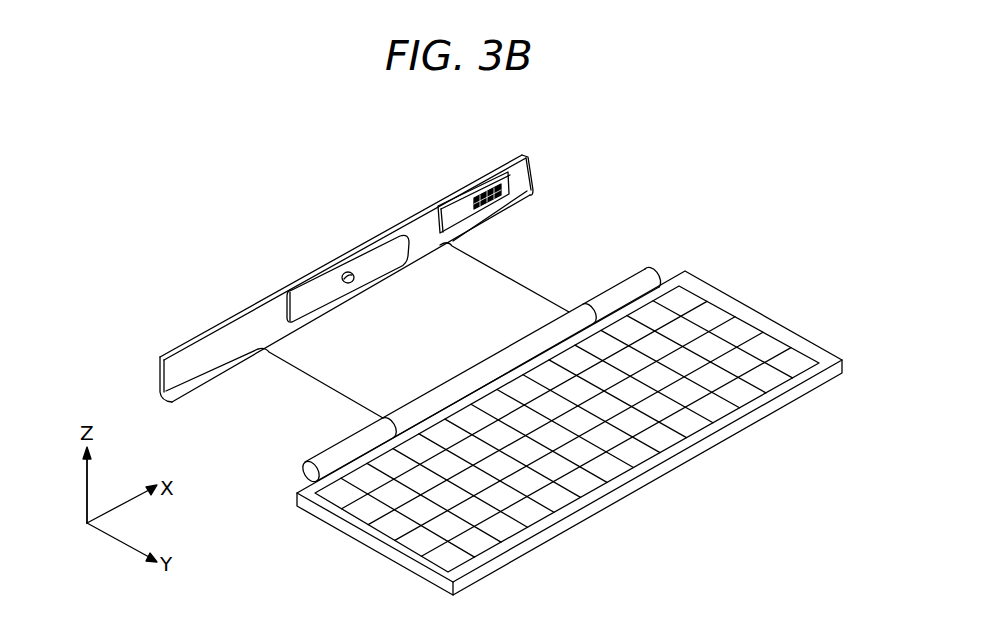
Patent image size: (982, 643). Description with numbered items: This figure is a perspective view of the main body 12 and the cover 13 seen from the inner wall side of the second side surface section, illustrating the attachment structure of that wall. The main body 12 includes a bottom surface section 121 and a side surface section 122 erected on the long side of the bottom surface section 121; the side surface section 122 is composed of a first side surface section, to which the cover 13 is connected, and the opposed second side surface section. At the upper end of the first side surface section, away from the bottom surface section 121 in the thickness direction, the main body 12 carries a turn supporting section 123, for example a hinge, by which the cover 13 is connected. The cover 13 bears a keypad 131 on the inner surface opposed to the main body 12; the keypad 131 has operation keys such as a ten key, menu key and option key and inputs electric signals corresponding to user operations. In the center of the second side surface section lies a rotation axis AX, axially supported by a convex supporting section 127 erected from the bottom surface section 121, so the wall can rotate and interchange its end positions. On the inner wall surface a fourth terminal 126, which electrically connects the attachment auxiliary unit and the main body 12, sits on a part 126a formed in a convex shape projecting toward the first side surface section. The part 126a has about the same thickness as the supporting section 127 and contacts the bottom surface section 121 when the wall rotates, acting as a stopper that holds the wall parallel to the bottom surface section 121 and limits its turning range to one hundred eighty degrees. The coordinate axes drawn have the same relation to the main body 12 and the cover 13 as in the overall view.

The main body 12 is at (540, 269).
The cover 13 is at (782, 324).
The bottom surface section 121 is at (344, 374).
The side surface section 122 is at (222, 328).
The turn supporting section 123 is at (653, 267).
The fourth terminal 126 is at (478, 183).
The part 126a is at (454, 215).
The supporting section 127 is at (373, 258).
The keypad 131 is at (555, 498).
The rotation axis AX is at (348, 270).